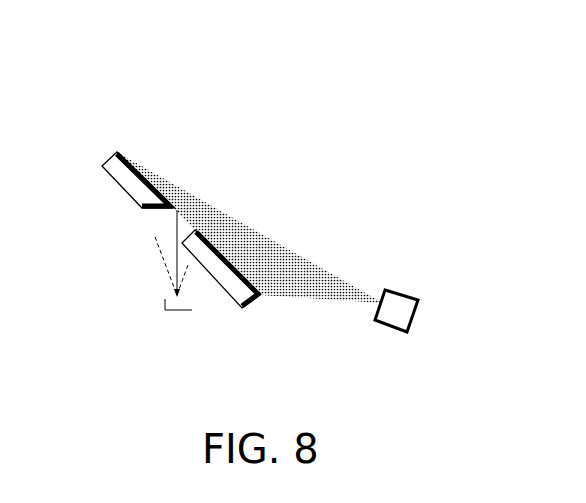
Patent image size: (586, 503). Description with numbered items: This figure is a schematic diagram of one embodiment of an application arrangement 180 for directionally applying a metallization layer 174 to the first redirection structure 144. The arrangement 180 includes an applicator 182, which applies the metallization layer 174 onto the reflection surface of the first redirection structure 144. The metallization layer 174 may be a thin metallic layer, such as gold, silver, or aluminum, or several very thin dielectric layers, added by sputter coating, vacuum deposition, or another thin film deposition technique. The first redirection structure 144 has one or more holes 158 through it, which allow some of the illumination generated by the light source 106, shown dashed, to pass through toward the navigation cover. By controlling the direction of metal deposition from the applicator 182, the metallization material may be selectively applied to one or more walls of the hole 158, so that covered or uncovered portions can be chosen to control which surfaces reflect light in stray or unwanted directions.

The application arrangement 180 is at (127, 53).
The metallization layer 174 is at (133, 152).
The first redirection structure 144 is at (111, 164).
The hole 158 is at (132, 230).
The light source 106 is at (165, 300).
The applicator 182 is at (392, 305).